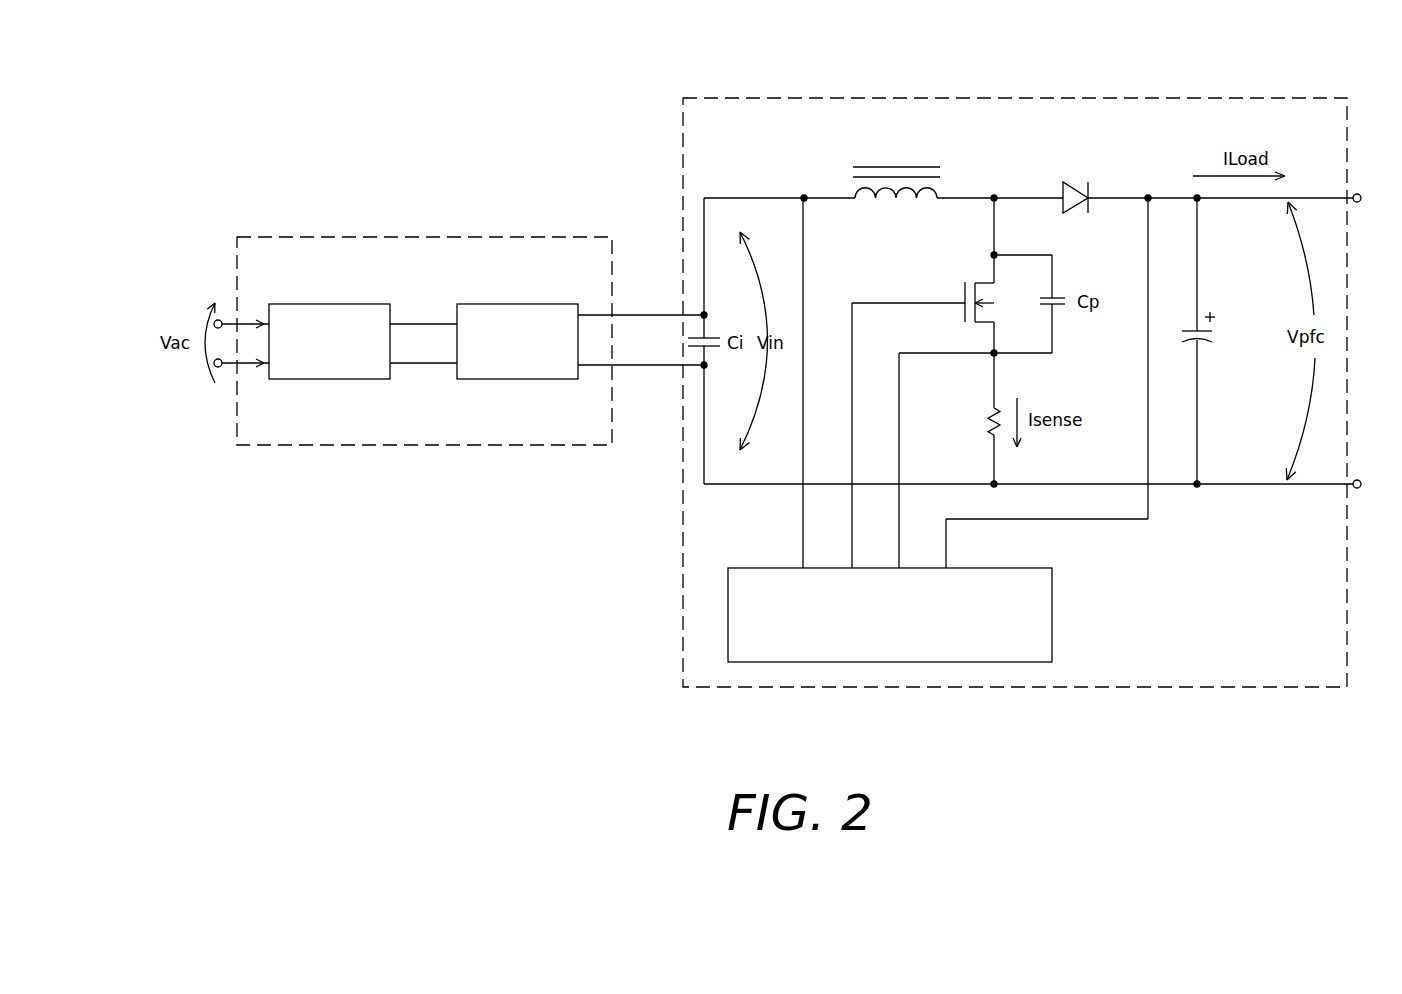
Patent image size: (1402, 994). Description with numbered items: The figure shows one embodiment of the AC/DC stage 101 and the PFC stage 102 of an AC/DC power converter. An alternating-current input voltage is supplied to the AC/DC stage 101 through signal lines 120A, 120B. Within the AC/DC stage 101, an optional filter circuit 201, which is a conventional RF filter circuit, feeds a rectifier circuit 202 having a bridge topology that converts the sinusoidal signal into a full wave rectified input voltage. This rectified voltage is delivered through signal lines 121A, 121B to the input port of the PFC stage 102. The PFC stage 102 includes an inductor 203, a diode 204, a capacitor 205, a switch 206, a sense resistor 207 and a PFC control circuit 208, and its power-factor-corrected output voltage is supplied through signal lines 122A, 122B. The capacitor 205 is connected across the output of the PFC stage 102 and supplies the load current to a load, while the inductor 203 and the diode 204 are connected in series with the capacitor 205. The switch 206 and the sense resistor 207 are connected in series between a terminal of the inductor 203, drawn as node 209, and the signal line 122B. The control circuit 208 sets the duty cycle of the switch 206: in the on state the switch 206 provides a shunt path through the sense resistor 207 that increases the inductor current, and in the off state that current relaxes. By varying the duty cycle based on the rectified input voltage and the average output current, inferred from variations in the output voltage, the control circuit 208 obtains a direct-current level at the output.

The AC/DC stage 101 is at (430, 232).
The PFC stage 102 is at (1058, 93).
The signal line 120A is at (230, 324).
The signal line 120B is at (230, 363).
The signal line 121A is at (642, 313).
The signal line 121B is at (642, 367).
The signal line 122A is at (1333, 195).
The signal line 122B is at (1340, 487).
The filter circuit 201 is at (320, 304).
The rectifier circuit 202 is at (510, 304).
The inductor 203 is at (858, 163).
The diode 204 is at (1066, 212).
The capacitor 205 is at (1205, 341).
The switch 206 is at (962, 316).
The sense resistor 207 is at (990, 405).
The PFC control circuit 208 is at (1030, 565).
The switching node 209 is at (993, 195).